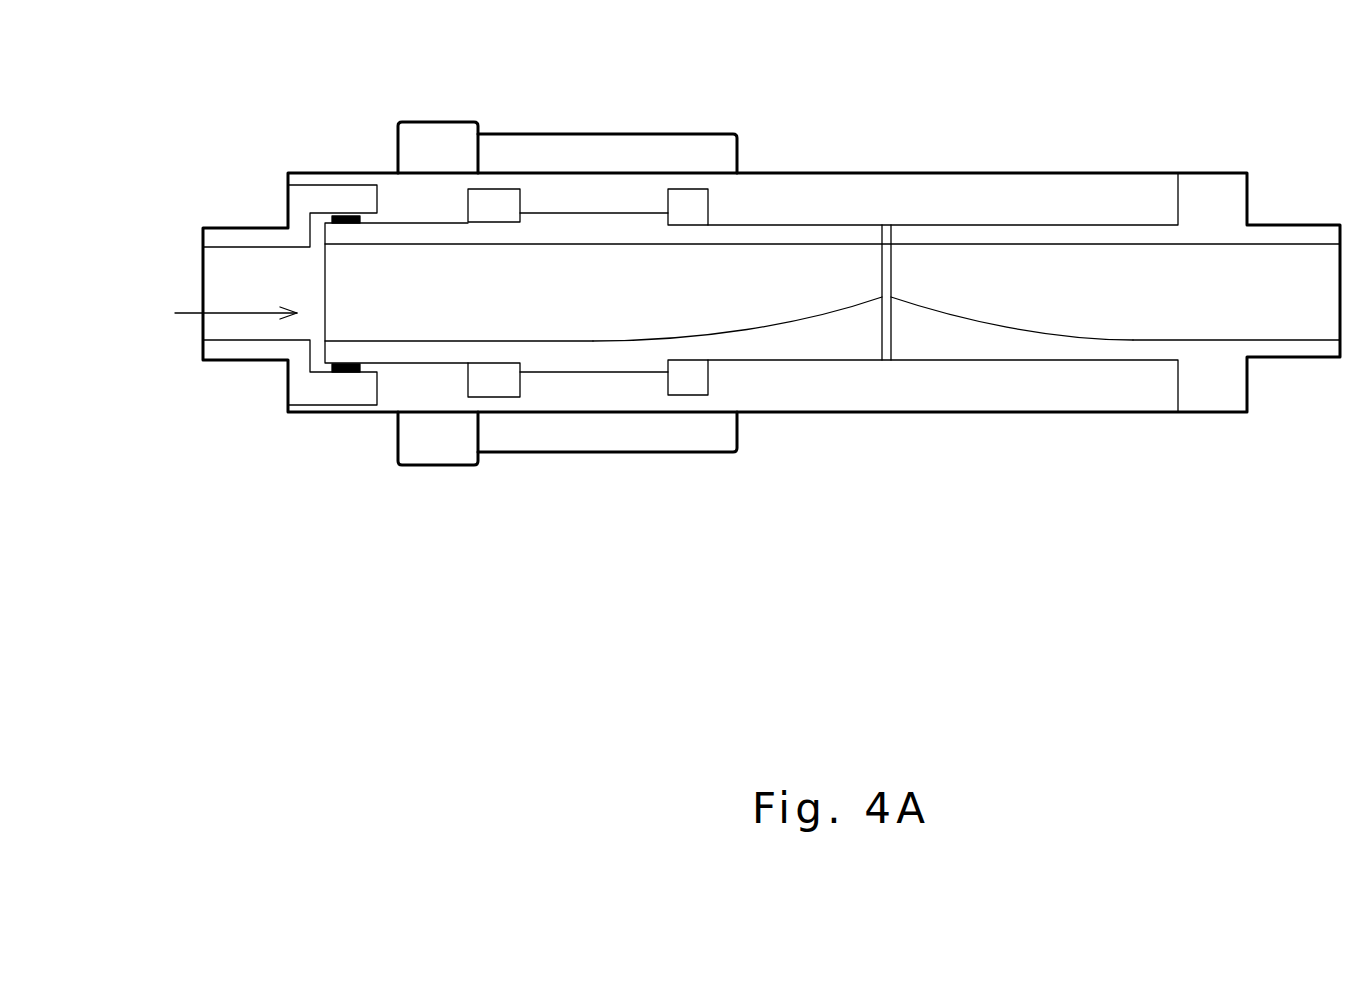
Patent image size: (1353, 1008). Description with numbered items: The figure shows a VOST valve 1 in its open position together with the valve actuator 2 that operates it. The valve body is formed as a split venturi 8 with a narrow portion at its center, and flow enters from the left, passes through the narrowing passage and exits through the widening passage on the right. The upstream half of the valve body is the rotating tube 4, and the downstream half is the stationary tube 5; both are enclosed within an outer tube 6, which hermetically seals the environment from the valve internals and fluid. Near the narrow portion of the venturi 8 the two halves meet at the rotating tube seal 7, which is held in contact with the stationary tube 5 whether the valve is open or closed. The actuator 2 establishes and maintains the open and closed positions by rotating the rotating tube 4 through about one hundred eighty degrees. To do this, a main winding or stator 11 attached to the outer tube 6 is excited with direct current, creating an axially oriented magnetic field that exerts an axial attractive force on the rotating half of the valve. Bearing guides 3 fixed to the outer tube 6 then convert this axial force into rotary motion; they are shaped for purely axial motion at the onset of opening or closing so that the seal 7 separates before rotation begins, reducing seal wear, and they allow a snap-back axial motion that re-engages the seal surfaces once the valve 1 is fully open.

The valve 1 is at (215, 160).
The valve actuator 2 is at (775, 493).
The bearing guides 3 is at (610, 122).
The rotating tube 4 is at (795, 337).
The stationary tube 5 is at (972, 337).
The outer tube 6 is at (1110, 172).
The rotating tube seal 7 is at (890, 225).
The venturi 8 is at (857, 268).
The main winding or stator 11 is at (452, 121).